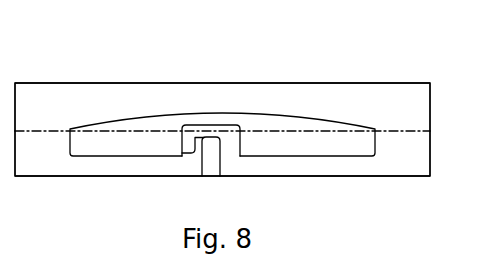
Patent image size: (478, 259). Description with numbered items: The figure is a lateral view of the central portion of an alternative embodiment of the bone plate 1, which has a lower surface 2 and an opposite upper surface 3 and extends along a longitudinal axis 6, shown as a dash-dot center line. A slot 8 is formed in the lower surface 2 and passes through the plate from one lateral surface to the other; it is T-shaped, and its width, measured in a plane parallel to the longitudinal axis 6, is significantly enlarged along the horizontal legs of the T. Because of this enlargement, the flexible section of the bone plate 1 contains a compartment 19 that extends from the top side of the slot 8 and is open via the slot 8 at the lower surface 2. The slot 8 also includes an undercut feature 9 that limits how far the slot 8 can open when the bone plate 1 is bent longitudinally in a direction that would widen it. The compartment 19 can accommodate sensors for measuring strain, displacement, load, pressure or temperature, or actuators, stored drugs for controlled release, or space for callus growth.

The bone plate 1 is at (234, 30).
The lower surface 2 is at (98, 176).
The upper surface 3 is at (100, 83).
The longitudinal axis 6 is at (398, 131).
The slot 8 is at (221, 158).
The undercut feature 9 is at (190, 164).
The compartment 19 is at (290, 140).